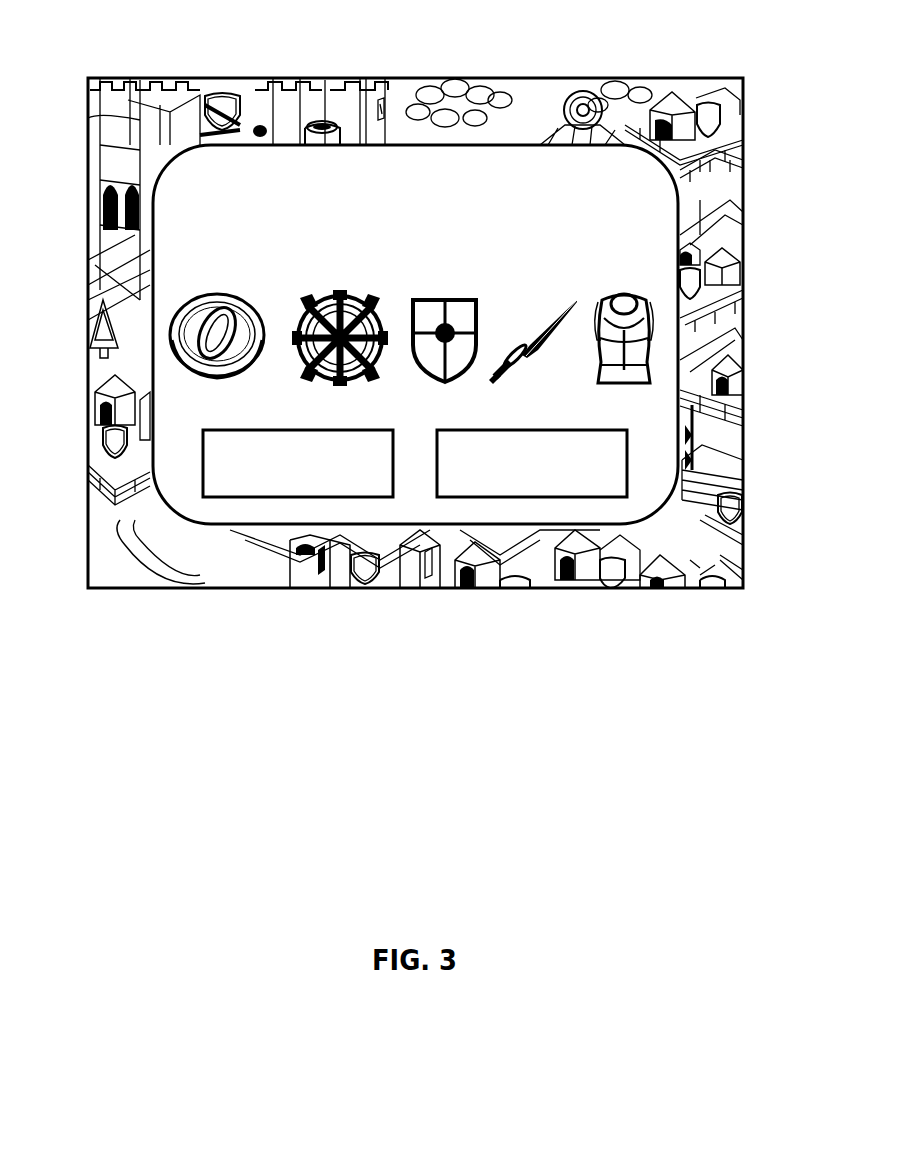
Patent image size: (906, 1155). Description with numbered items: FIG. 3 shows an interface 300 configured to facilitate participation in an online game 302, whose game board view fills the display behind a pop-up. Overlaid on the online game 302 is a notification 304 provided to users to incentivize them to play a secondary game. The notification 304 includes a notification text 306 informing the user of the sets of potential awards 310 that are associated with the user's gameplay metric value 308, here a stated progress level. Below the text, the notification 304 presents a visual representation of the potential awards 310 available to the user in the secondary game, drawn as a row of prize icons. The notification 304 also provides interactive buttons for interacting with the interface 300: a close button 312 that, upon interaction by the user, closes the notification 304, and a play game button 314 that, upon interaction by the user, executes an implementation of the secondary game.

The interface 300 is at (134, 72).
The online game 302 is at (135, 252).
The notification 304 is at (100, 327).
The notification text 306 is at (628, 190).
The gameplay metric value 308 is at (283, 242).
The potential awards 310 is at (658, 334).
The close button 312 is at (203, 466).
The play game button 314 is at (627, 466).